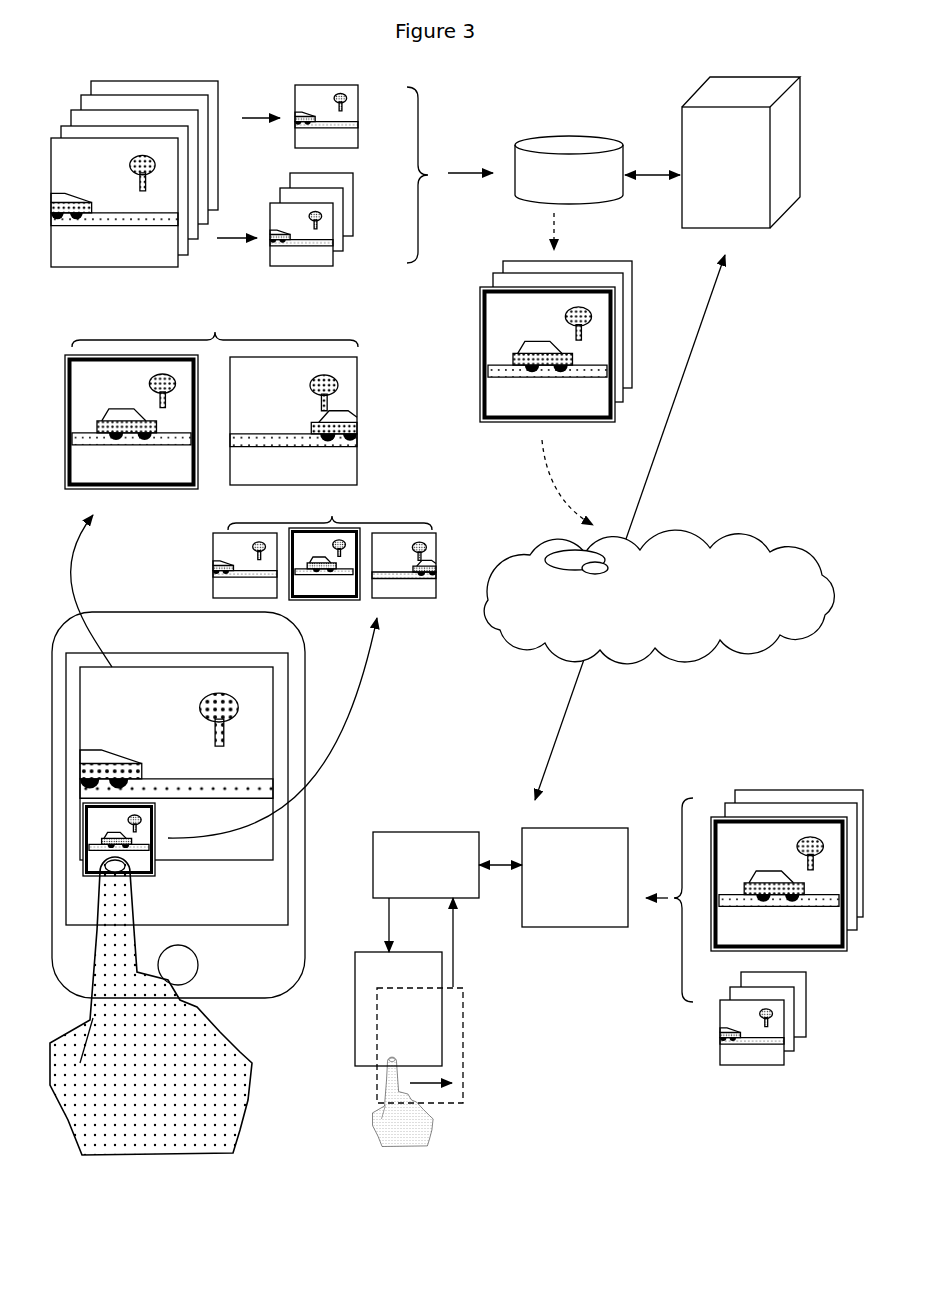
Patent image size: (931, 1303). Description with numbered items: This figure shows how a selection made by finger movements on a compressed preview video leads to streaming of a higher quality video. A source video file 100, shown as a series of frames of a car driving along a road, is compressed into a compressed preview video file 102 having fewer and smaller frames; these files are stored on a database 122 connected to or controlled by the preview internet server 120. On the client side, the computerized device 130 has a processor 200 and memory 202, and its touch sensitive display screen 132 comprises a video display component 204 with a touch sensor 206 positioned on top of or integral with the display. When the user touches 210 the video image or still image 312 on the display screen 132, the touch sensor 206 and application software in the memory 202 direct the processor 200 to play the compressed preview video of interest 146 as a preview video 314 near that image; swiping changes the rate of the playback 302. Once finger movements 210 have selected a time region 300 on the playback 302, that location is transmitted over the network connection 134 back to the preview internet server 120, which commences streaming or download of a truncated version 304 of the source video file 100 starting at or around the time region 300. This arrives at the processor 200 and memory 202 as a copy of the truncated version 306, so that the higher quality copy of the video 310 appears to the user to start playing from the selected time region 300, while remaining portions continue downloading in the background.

The source video file 100 is at (316, 80).
The compressed preview video file 102 is at (316, 268).
The database 122 is at (569, 170).
The preview internet server 120 is at (741, 152).
The truncated version of the source video file 304 is at (506, 250).
The time region 300 is at (470, 345).
The higher quality copy of the video 310 is at (215, 397).
The playback of the compressed preview video 302 is at (324, 545).
The video image or still image 312 is at (176, 763).
The preview video file playing on display screen 314 is at (119, 839).
The touch sensitive display screen 132 is at (177, 789).
The computerized device 130 is at (240, 1010).
The finger movements 210 is at (245, 1145).
The processor 200 is at (426, 865).
The memory 202 is at (575, 877).
The video display component 204 is at (366, 947).
The touch sensor 206 is at (477, 1035).
The network connection 134 is at (659, 597).
The copy of the truncated version of the source video file 306 is at (737, 777).
The compressed preview video of interest 146 is at (745, 1072).